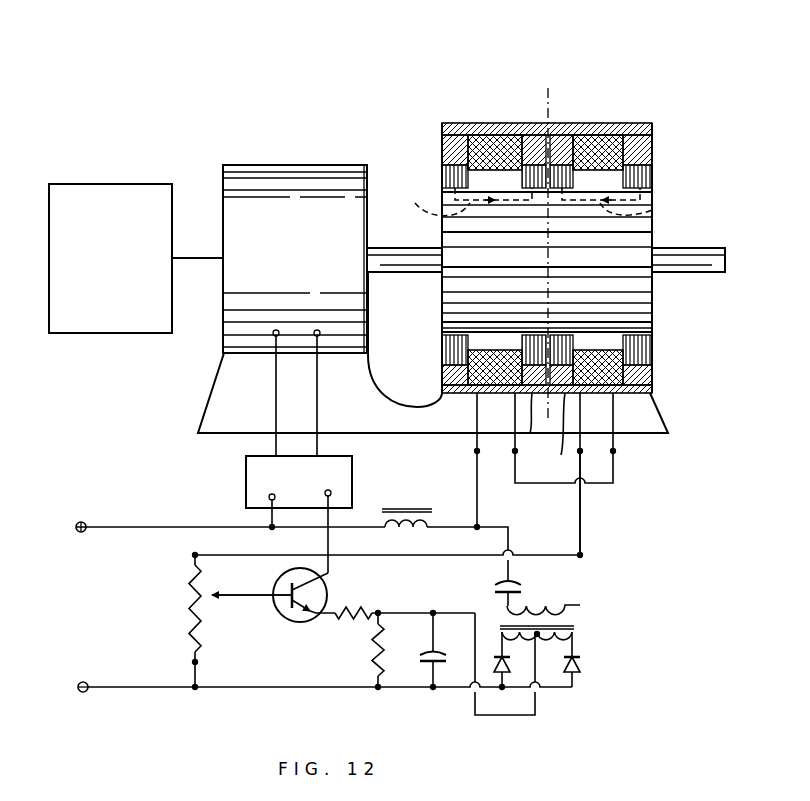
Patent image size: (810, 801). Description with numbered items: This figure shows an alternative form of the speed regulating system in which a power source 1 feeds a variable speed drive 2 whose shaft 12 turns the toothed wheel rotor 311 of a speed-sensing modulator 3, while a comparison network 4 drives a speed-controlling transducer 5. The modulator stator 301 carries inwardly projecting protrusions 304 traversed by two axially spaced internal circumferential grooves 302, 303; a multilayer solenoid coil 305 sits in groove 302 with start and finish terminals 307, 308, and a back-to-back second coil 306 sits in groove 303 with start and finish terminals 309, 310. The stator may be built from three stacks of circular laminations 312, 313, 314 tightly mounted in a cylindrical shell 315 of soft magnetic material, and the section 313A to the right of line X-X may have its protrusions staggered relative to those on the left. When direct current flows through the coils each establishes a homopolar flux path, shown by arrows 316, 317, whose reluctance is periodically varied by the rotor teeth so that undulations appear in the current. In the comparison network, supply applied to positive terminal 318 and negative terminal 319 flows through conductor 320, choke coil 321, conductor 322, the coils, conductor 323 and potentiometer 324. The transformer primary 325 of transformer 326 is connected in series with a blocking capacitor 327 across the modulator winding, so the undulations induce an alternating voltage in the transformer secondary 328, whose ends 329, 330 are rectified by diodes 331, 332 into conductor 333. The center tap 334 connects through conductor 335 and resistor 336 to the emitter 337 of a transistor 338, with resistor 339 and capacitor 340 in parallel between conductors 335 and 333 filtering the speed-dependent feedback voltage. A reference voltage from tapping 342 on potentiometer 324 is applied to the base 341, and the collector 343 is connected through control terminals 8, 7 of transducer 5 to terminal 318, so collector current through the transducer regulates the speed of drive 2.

The power source 1 is at (115, 268).
The variable speed drive 2 is at (296, 258).
The speed-sensing modulator 3 is at (516, 95).
The comparison network 4 is at (314, 646).
The speed-controlling transducer 5 is at (301, 485).
The control terminal 7 is at (270, 494).
The control terminal 8 is at (326, 492).
The shaft 12 is at (400, 262).
The stator 301 is at (432, 160).
The internal circumferential groove 302 is at (512, 190).
The internal circumferential groove 303 is at (614, 190).
The protrusions 304 is at (455, 172).
The multilayer solenoid coil 305 is at (497, 150).
The second coil 306 is at (608, 150).
The start terminal 307 is at (477, 451).
The finish terminal 308 is at (515, 451).
The start terminal 309 is at (613, 451).
The finish terminal 310 is at (580, 451).
The toothed wheel rotor 311 is at (640, 285).
The stack of circular laminations 312 is at (655, 150).
The stack of circular laminations 313 is at (536, 424).
The stator section half 313A is at (560, 435).
The stack of circular laminations 314 is at (655, 375).
The cylindrical shell 315 is at (447, 128).
The magnetic flux path arrows 316 is at (458, 201).
The magnetic flux path arrows 317 is at (655, 215).
The positive terminal 318 is at (76, 532).
The negative terminal 319 is at (78, 686).
The conductor 320 is at (178, 527).
The choke coil 321 is at (412, 513).
The conductor 322 is at (478, 500).
The conductor 323 is at (580, 518).
The potentiometer 324 is at (192, 603).
The transformer primary 325 is at (537, 606).
The transformer 326 is at (580, 626).
The blocking capacitor 327 is at (496, 588).
The transformer secondary 328 is at (540, 640).
The secondary end 329 is at (505, 641).
The secondary end 330 is at (574, 636).
The diode 331 is at (498, 656).
The diode 332 is at (582, 669).
The conductor 333 is at (311, 690).
The center tap 334 is at (537, 642).
The conductor 335 is at (397, 613).
The resistor 336 is at (342, 608).
The emitter 337 is at (296, 617).
The transistor 338 is at (270, 580).
The resistor 339 is at (372, 662).
The capacitor 340 is at (426, 654).
The base 341 is at (284, 597).
The tapping 342 is at (214, 598).
The collector 343 is at (320, 580).